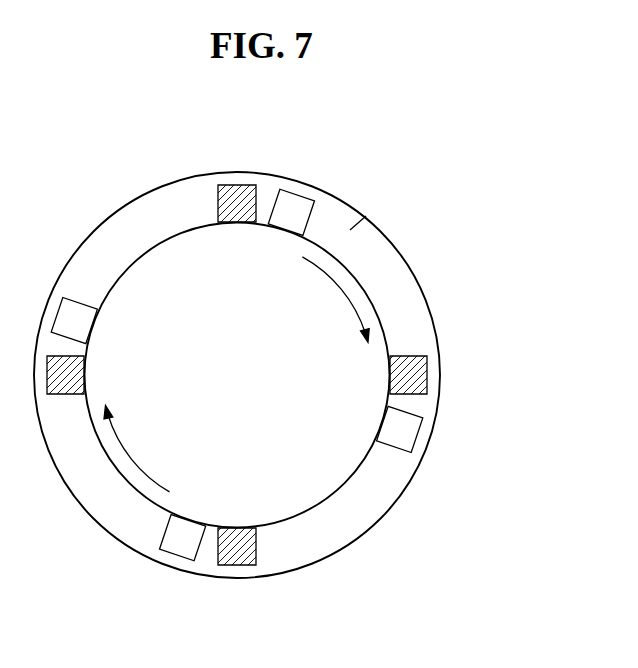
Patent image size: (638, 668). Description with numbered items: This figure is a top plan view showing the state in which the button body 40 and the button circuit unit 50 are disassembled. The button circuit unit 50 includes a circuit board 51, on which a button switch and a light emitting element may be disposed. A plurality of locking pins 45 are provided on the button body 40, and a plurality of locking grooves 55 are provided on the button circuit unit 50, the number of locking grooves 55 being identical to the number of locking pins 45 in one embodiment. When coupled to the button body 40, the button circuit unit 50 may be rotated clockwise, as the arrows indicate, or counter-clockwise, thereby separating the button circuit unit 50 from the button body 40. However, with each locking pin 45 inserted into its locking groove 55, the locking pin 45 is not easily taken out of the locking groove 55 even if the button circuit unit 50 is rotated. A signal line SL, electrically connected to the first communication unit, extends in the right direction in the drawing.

The button body 40 is at (333, 178).
The locking pin 45 is at (235, 186).
The button circuit unit 50 is at (128, 192).
The circuit board 51 is at (399, 263).
The locking groove 55 is at (291, 180).
The signal line SL is at (366, 216).